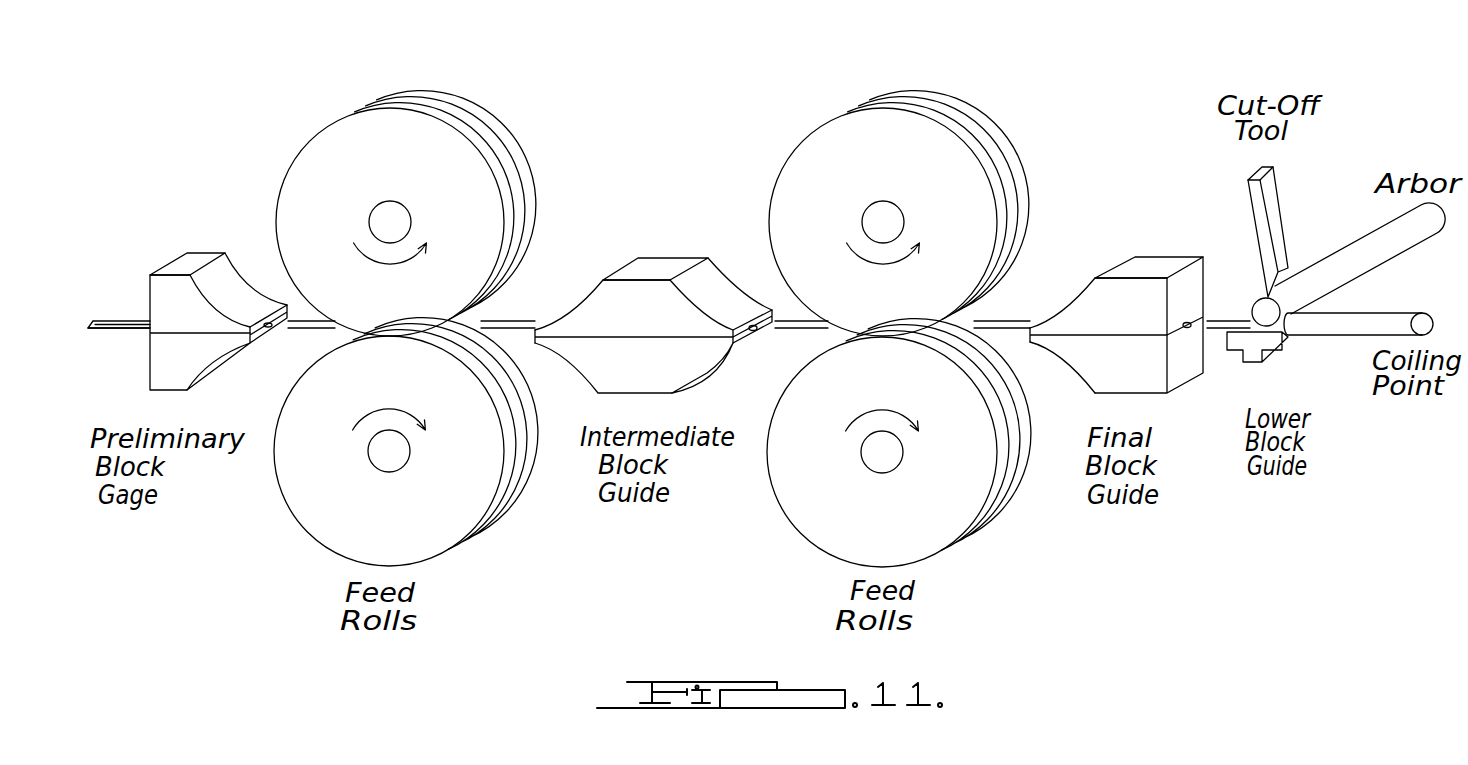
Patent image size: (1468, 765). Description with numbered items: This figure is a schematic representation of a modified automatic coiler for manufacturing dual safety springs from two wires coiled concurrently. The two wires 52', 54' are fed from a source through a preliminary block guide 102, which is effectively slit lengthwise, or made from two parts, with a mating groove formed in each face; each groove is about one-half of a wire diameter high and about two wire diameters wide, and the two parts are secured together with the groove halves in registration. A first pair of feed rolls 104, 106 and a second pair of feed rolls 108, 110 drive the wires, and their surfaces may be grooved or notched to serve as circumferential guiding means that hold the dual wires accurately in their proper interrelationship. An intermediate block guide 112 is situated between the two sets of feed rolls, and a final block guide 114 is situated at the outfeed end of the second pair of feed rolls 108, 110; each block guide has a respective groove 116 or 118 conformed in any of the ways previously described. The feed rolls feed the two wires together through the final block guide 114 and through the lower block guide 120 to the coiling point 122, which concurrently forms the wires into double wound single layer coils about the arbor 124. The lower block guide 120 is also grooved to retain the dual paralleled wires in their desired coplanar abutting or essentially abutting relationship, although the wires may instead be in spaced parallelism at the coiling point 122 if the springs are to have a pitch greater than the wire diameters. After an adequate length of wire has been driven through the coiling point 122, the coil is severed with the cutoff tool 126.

The wire 52' is at (118, 368).
The wire 54' is at (119, 276).
The preliminary block guide 102 is at (234, 382).
The feed roll 104 is at (426, 518).
The feed roll 106 is at (347, 146).
The feed roll 108 is at (830, 513).
The feed roll 110 is at (843, 142).
The intermediate block guide 112 is at (656, 248).
The final block guide 114 is at (1125, 249).
The groove 116 is at (753, 332).
The groove 118 is at (1187, 330).
The lower block guide 120 is at (1252, 364).
The coiling point 122 is at (1388, 322).
The arbor 124 is at (1352, 256).
The cutoff tool 126 is at (1251, 196).